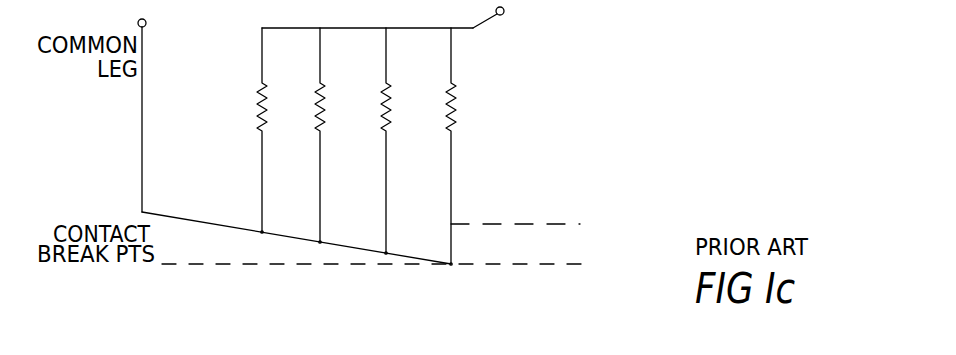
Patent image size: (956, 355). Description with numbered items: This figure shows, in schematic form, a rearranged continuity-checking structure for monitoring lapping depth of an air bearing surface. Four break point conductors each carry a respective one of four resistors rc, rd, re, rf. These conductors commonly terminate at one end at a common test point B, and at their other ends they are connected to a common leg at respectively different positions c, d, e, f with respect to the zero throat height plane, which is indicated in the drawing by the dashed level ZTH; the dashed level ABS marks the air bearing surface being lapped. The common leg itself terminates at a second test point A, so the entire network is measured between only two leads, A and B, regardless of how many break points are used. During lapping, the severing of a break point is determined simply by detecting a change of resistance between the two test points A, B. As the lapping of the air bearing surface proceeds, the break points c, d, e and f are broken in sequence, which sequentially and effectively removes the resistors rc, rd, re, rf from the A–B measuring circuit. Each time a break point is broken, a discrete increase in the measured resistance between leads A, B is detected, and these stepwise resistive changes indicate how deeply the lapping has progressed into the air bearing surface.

The test point A is at (150, 106).
The common test point B is at (499, 14).
The resistor rc is at (247, 130).
The resistor rd is at (309, 135).
The resistor re is at (374, 140).
The resistor rf is at (437, 146).
The break point c is at (192, 250).
The break point d is at (320, 243).
The break point e is at (353, 272).
The break point f is at (420, 280).
The threshold impedance level ZTH is at (538, 222).
The absolute impedance level ABS is at (401, 264).